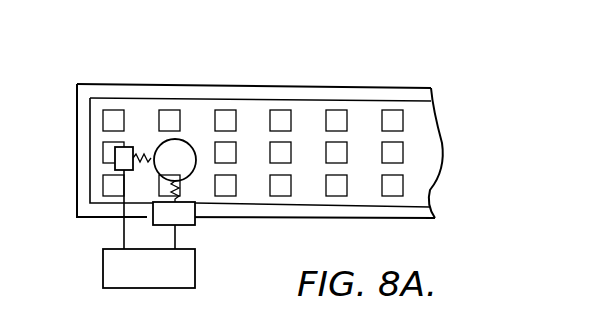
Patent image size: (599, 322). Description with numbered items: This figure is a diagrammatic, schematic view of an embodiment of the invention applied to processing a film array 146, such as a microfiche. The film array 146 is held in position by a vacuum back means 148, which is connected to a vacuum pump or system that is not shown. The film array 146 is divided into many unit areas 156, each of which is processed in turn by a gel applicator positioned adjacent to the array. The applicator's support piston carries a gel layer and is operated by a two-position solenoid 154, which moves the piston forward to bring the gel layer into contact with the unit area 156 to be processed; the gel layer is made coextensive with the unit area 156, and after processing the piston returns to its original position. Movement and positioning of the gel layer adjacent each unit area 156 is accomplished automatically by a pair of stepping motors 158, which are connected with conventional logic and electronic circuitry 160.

The film array 146 is at (258, 112).
The vacuum back means 148 is at (110, 92).
The two-position solenoid 154 is at (182, 147).
The unit area 156 is at (113, 120).
The stepping motors 158 is at (117, 164).
The logic and electronic circuitry 160 is at (166, 279).